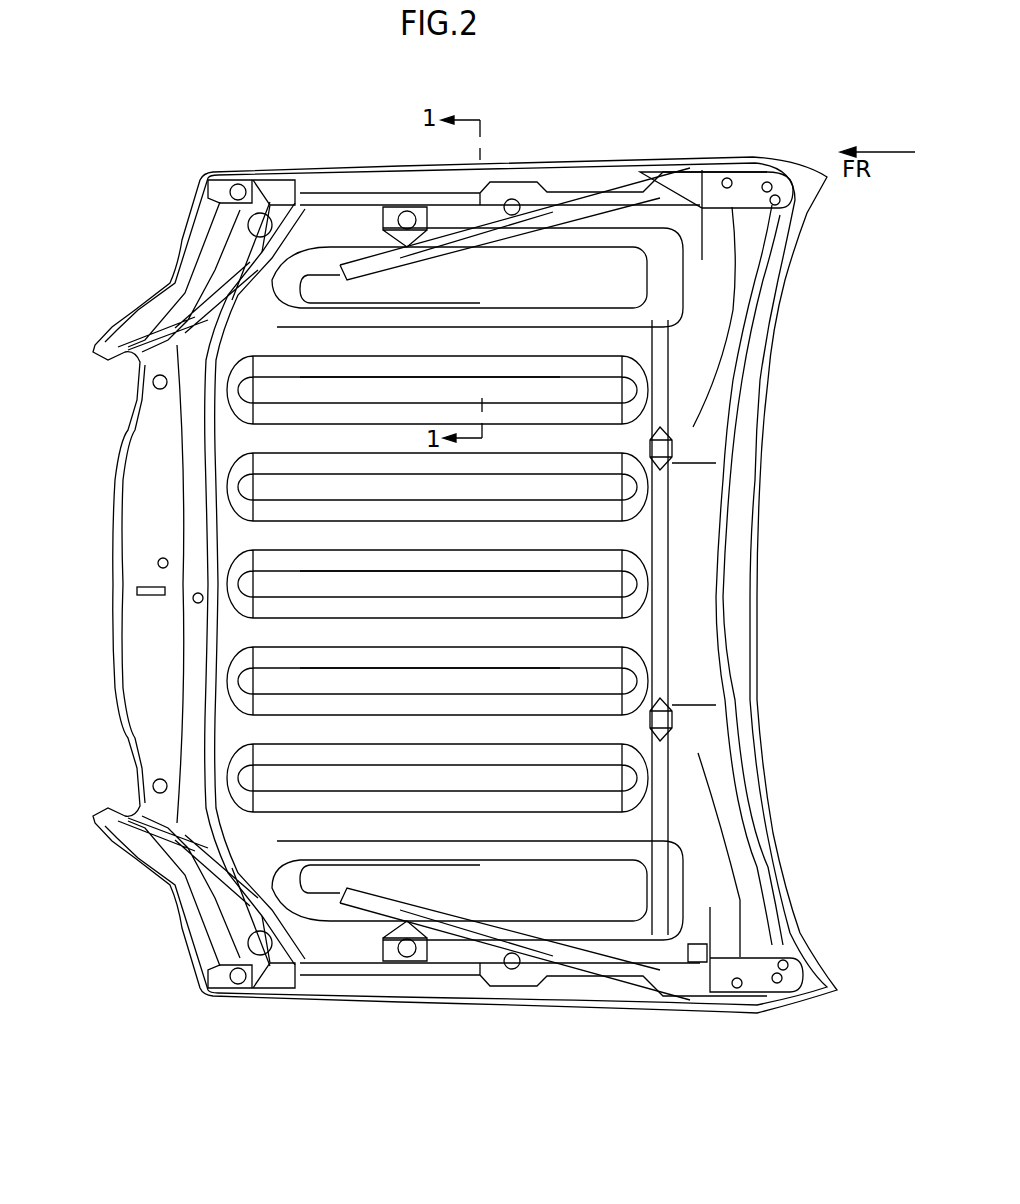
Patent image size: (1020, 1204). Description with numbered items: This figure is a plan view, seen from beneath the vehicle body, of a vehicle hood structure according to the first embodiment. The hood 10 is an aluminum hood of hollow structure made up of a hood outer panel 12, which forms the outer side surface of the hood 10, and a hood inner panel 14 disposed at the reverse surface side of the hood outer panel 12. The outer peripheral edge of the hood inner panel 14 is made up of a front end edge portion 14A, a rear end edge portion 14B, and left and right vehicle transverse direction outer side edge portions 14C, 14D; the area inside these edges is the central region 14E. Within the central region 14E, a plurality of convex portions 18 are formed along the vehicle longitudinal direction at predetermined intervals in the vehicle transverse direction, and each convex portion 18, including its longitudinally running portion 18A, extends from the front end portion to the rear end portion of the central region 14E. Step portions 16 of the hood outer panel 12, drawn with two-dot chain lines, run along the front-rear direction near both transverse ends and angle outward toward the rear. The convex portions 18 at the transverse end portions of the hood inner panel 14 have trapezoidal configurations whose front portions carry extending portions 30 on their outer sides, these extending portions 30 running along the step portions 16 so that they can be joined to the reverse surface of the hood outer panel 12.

The hood 10 is at (828, 523).
The hood outer panel 12 is at (757, 545).
The hood inner panel 14 is at (752, 614).
The front end edge portion 14A is at (160, 495).
The rear end edge portion 14B is at (690, 650).
The vehicle transverse direction outer side edge portion 14C is at (590, 180).
The vehicle transverse direction outer side edge portion 14D is at (602, 998).
The central region 14E is at (647, 449).
The step portion 16 is at (477, 253).
The convex portion 18 is at (267, 353).
The straight portion of tube 18A is at (420, 395).
The extending portion 30 is at (410, 267).